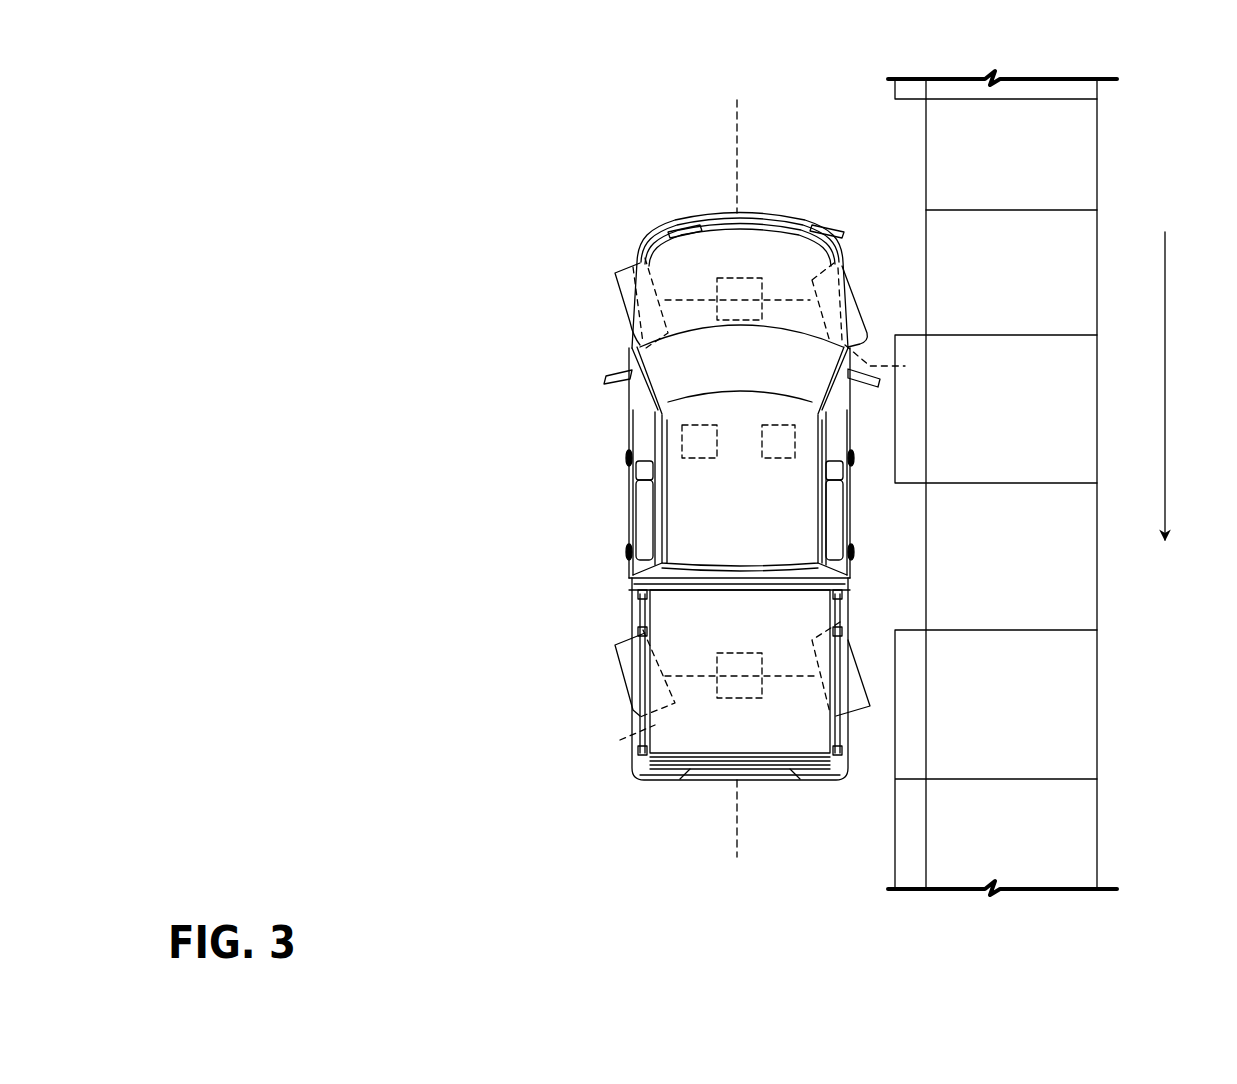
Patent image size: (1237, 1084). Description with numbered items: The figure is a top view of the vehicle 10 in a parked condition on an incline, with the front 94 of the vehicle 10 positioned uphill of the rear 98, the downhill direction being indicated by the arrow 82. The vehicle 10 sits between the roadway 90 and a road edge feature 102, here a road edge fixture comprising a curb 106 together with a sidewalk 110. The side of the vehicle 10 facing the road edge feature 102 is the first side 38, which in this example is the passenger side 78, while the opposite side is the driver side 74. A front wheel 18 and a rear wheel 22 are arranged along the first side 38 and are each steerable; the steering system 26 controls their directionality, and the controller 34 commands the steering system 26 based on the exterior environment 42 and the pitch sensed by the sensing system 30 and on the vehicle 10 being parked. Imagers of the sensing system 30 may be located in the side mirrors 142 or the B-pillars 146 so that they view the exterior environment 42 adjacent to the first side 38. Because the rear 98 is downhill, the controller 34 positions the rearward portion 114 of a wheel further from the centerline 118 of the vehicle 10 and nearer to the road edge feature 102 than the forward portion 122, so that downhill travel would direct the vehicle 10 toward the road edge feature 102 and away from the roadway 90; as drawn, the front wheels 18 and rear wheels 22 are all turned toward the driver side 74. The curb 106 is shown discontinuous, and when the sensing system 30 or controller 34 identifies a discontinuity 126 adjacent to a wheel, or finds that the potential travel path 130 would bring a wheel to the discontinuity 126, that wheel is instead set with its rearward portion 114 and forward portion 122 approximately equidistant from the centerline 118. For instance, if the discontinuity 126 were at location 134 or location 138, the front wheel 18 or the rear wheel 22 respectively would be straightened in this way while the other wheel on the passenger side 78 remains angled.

The vehicle 10 is at (814, 494).
The front wheel 18 is at (613, 274).
The rear wheel 22 is at (617, 655).
The steering system 26 is at (735, 277).
The sensing system 30 is at (880, 436).
The controller 34 is at (880, 436).
The first side 38 is at (853, 533).
The exterior environment 42 is at (1055, 150).
The driver side 74 is at (630, 520).
The passenger side 78 is at (853, 572).
The arrow 82 is at (1168, 398).
The roadway 90 is at (425, 408).
The front 94 is at (677, 217).
The rear 98 is at (660, 778).
The road edge feature 102 is at (1040, 122).
The curb 106 is at (908, 862).
The sidewalk 110 is at (1037, 748).
The rearward portion 114 is at (630, 345).
The centerline 118 is at (737, 157).
The forward portion 122 is at (642, 258).
The discontinuity 126 is at (915, 135).
The potential travel path 130 is at (867, 370).
The location 134 is at (913, 510).
The location 138 is at (897, 770).
The side mirror 142 is at (600, 379).
The B-pillar 146 is at (640, 478).